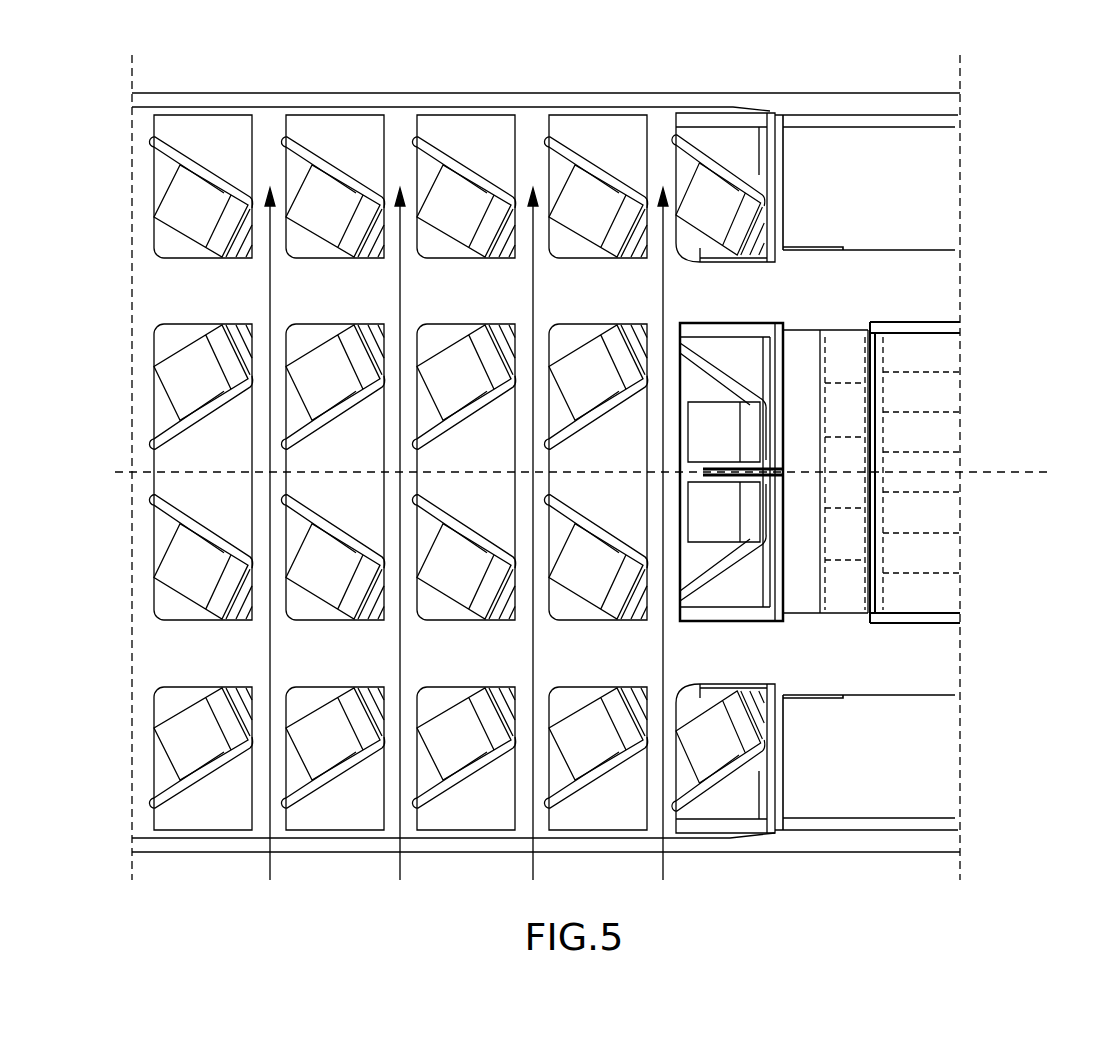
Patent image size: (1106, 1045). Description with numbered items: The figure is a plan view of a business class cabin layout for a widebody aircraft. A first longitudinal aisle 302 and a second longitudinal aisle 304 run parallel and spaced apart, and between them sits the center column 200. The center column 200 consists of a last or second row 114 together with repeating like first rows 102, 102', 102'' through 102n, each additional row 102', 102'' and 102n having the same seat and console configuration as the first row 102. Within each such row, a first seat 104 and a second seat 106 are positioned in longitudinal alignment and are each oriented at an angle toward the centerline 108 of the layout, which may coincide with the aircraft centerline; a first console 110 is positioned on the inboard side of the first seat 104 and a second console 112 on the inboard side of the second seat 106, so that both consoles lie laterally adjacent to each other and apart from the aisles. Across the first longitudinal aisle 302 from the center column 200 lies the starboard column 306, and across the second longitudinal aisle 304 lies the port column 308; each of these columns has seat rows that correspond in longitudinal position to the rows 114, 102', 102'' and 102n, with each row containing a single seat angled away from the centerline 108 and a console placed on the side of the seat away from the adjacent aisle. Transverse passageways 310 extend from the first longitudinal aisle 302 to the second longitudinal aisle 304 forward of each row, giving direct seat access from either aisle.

The first row 102 is at (595, 428).
The additional row 102' is at (464, 428).
The additional row 102'' is at (332, 428).
The additional row 102n is at (247, 85).
The first seat 104 is at (304, 217).
The second seat 106 is at (304, 389).
The centerline 108 is at (1003, 472).
The first console 110 is at (328, 151).
The second console 112 is at (329, 452).
The second row 114 is at (670, 85).
The center column 200 is at (122, 325).
The first longitudinal aisle 302 is at (444, 303).
The second longitudinal aisle 304 is at (444, 664).
The starboard column 306 is at (122, 115).
The port column 308 is at (122, 687).
The transverse passageway 310 is at (466, 547).